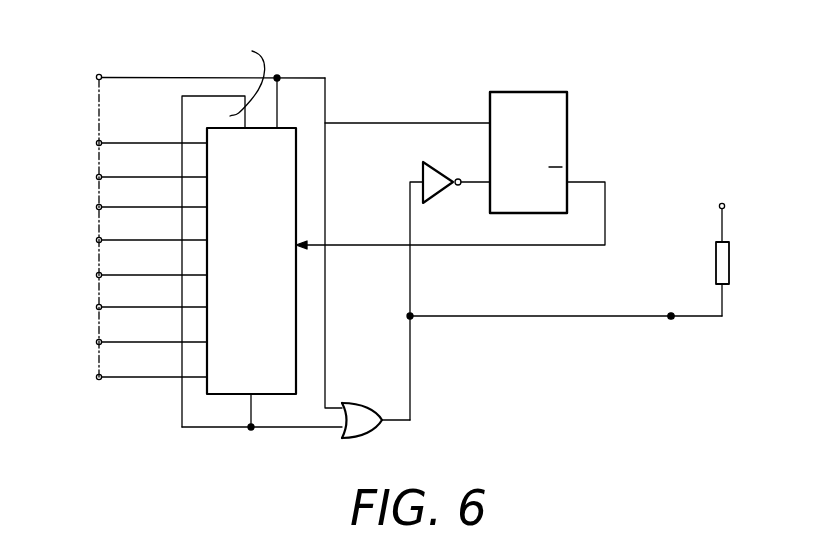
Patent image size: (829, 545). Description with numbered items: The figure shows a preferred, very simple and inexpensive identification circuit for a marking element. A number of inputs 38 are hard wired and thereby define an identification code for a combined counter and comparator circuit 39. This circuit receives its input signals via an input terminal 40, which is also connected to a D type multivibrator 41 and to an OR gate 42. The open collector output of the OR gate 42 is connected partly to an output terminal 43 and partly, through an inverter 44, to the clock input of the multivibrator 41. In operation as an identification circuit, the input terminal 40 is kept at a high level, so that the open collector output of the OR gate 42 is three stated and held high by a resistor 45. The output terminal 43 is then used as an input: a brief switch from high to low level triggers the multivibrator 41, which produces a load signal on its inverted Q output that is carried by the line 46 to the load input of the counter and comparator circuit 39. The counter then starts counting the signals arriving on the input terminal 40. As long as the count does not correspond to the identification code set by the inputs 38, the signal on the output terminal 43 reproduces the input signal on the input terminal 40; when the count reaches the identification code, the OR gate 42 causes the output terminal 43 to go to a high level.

The inputs 38 is at (85, 127).
The combined counter and comparator circuit 39 is at (273, 215).
The input terminal 40 is at (99, 75).
The D type multivibrator 41 is at (527, 104).
The OR gate 42 is at (357, 408).
The output terminal 43 is at (671, 319).
The inverter 44 is at (437, 201).
The resistor 45 is at (729, 258).
The line 46 is at (606, 232).